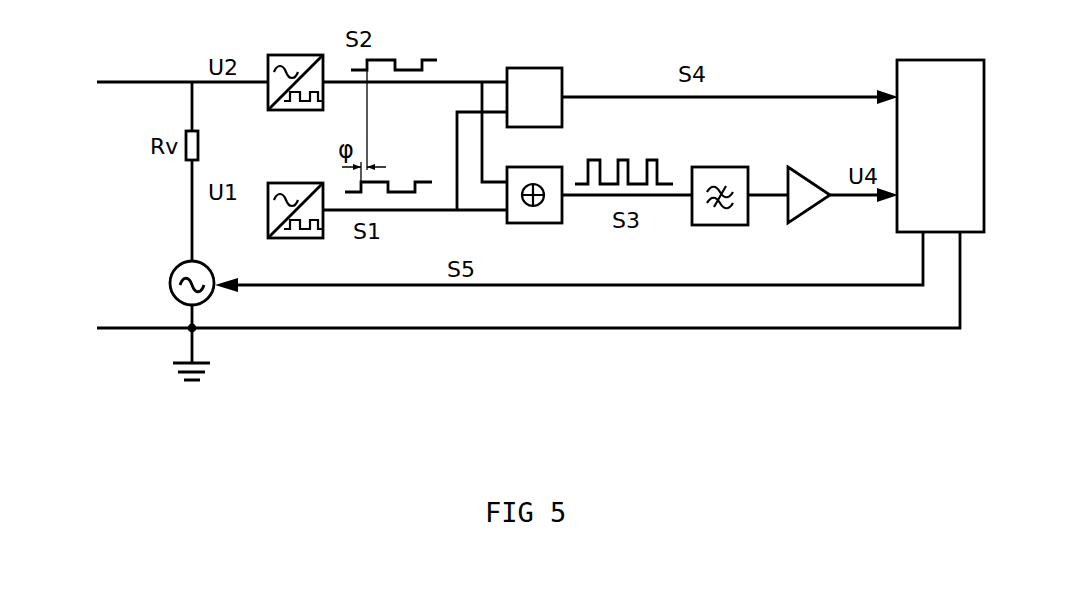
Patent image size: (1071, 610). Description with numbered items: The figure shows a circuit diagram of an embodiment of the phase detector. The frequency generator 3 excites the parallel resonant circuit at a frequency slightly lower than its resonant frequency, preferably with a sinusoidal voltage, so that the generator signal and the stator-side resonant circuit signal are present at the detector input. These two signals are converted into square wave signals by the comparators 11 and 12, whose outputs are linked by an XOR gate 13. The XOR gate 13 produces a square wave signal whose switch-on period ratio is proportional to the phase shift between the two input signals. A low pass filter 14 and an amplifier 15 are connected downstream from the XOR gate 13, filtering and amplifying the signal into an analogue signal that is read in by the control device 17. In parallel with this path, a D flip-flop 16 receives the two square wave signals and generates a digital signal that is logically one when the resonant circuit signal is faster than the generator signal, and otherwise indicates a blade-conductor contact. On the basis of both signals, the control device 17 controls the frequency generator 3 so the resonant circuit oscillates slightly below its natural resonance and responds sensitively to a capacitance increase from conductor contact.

The frequency generator 3 is at (171, 279).
The comparator 11 is at (268, 183).
The comparator 12 is at (289, 54).
The XOR gate 13 is at (562, 167).
The low pass filter 14 is at (703, 167).
The amplifier 15 is at (800, 173).
The D flip-flop 16 is at (522, 67).
The control device 17 is at (923, 59).